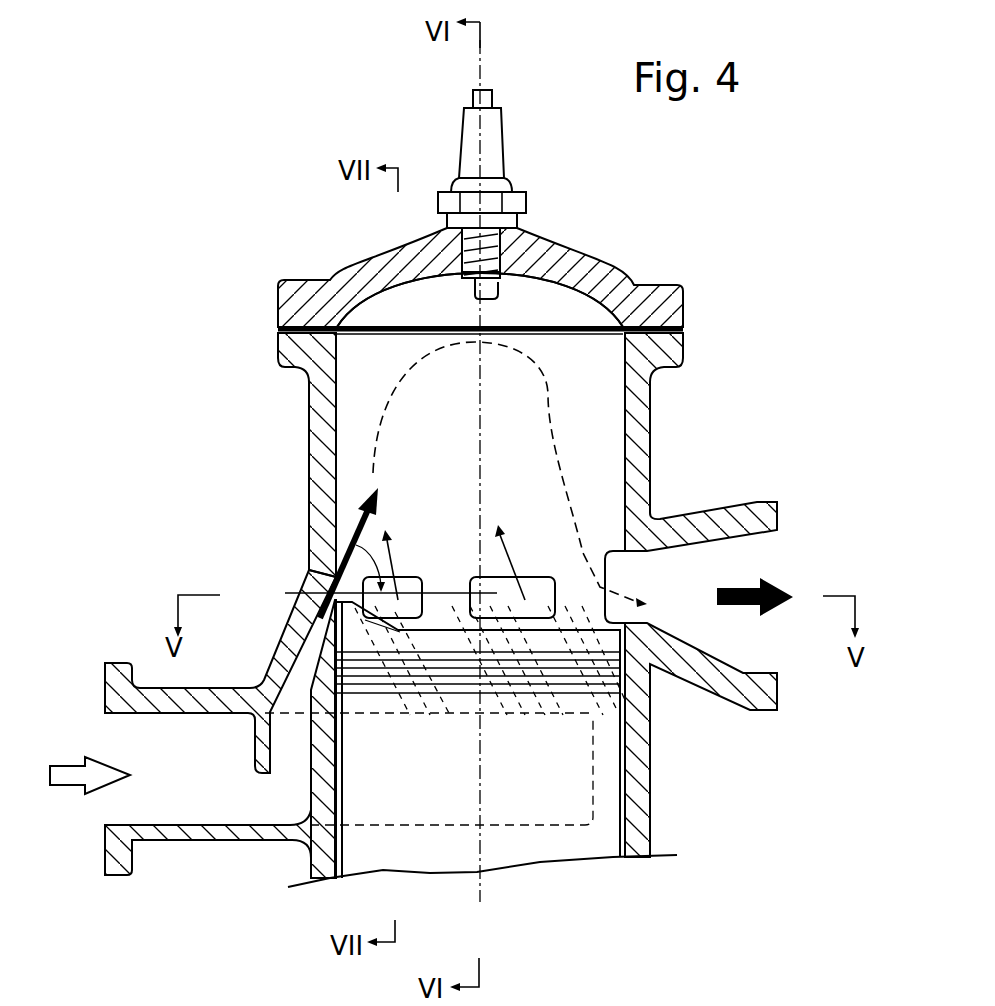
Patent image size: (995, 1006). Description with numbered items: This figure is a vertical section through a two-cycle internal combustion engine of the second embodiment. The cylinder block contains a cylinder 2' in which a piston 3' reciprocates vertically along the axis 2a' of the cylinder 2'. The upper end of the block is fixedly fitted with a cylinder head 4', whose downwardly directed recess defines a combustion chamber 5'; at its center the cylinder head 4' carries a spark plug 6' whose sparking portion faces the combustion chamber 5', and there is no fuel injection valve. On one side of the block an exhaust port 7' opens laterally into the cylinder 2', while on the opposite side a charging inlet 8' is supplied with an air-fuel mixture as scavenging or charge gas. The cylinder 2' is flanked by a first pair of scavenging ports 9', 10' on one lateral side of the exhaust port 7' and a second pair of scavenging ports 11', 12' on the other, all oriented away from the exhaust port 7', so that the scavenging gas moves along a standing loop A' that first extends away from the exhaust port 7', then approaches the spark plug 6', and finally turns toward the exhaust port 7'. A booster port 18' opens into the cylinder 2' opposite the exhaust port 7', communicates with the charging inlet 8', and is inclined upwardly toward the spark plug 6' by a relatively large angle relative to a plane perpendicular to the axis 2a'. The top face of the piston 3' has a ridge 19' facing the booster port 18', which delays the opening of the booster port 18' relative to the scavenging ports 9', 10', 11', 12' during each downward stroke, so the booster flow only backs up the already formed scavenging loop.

The cylinder 2' is at (510, 455).
The axis of the cylinder 2a' is at (430, 817).
The piston 3' is at (480, 765).
The cylinder head 4' is at (480, 265).
The combustion chamber 5' is at (485, 259).
The spark plug 6' is at (512, 194).
The exhaust port 7' is at (699, 704).
The charging inlet 8' is at (180, 835).
The scavenging port 9' is at (643, 521).
The scavenging port 10' is at (577, 494).
The scavenging port 11' is at (610, 530).
The scavenging port 12' is at (537, 503).
The booster port 18' is at (220, 658).
The ridge 19' is at (306, 761).
The standing loop A' is at (523, 410).